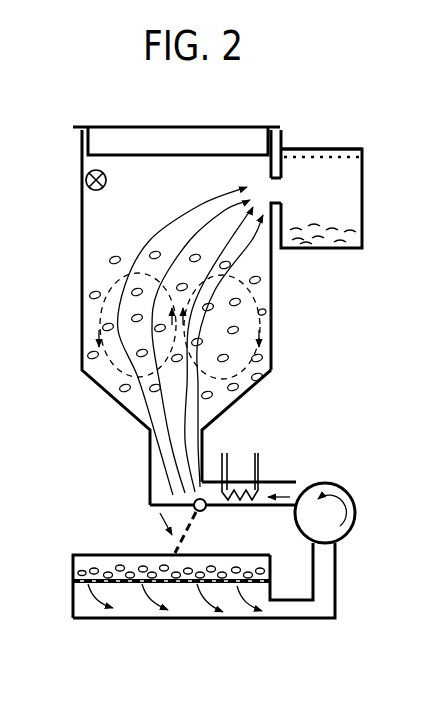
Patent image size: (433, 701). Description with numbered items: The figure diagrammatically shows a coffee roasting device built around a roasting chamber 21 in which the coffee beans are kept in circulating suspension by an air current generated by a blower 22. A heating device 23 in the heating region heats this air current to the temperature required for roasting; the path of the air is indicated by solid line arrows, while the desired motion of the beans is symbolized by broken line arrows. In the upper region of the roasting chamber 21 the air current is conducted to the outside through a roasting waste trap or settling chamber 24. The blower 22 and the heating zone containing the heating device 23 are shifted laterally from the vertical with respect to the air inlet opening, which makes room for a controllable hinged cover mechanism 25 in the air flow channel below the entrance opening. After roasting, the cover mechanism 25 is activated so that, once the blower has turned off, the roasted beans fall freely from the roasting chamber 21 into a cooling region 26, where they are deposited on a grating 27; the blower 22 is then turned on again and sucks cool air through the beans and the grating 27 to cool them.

The roasting chamber 21 is at (92, 243).
The blower 22 is at (346, 526).
The heating device 23 is at (260, 490).
The roasting waste trap or settling chamber 24 is at (362, 200).
The hinged cover mechanism 25 is at (156, 508).
The cooling region 26 is at (190, 607).
The grating 27 is at (132, 584).